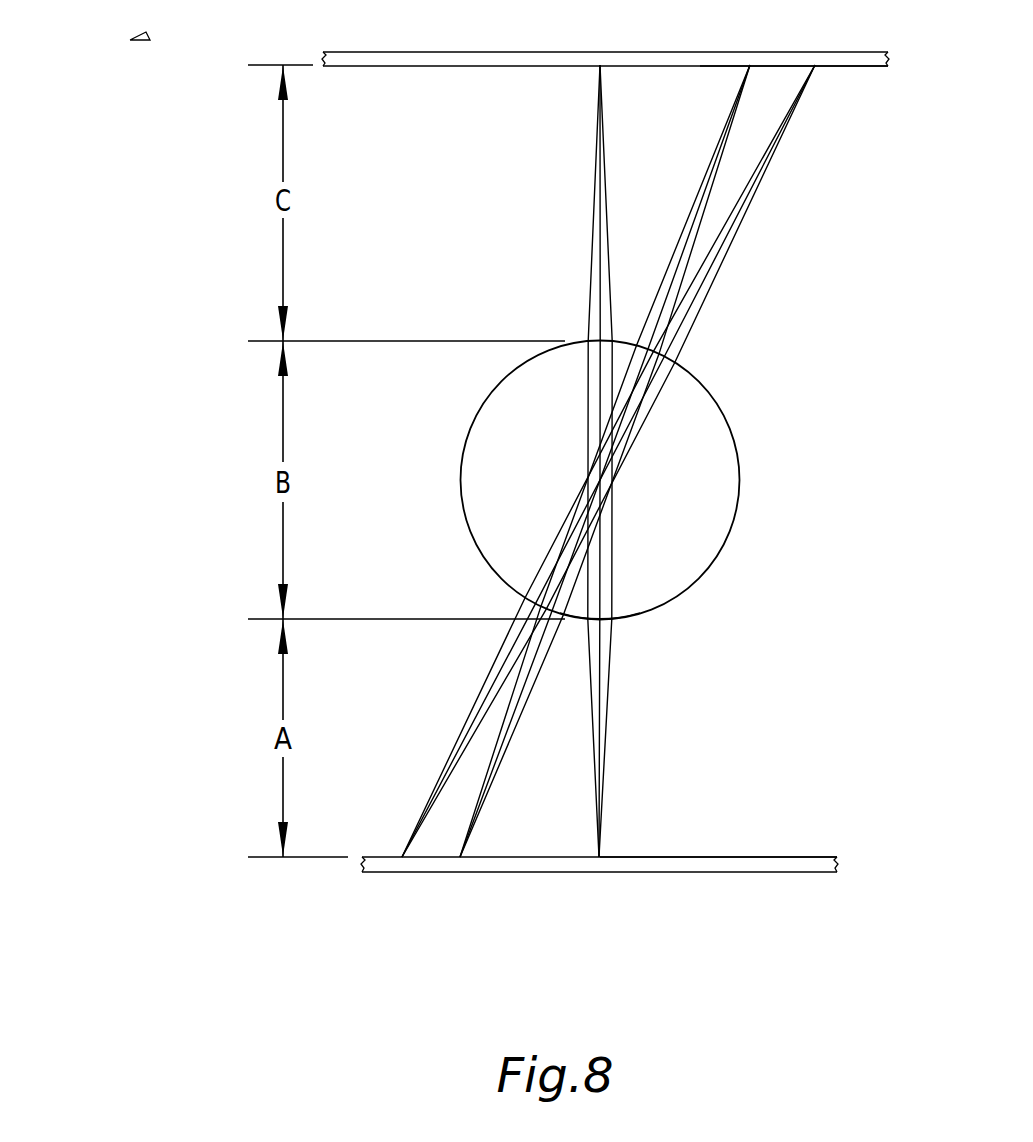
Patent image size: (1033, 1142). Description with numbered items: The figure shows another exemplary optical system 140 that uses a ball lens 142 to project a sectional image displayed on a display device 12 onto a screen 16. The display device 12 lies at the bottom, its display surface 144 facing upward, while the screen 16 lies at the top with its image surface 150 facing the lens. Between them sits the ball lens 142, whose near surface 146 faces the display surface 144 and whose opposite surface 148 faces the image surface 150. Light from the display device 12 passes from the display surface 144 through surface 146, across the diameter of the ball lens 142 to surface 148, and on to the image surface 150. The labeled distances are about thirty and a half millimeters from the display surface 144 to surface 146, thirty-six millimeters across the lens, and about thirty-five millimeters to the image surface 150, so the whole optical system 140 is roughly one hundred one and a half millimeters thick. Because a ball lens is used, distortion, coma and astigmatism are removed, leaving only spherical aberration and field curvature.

The optical system 140 is at (146, 39).
The screen 16 is at (873, 54).
The image surface 150 is at (843, 68).
The opposite surface 148 is at (618, 338).
The ball lens 142 is at (707, 383).
The surface 146 is at (613, 621).
The display surface 144 is at (697, 856).
The display device 12 is at (787, 873).